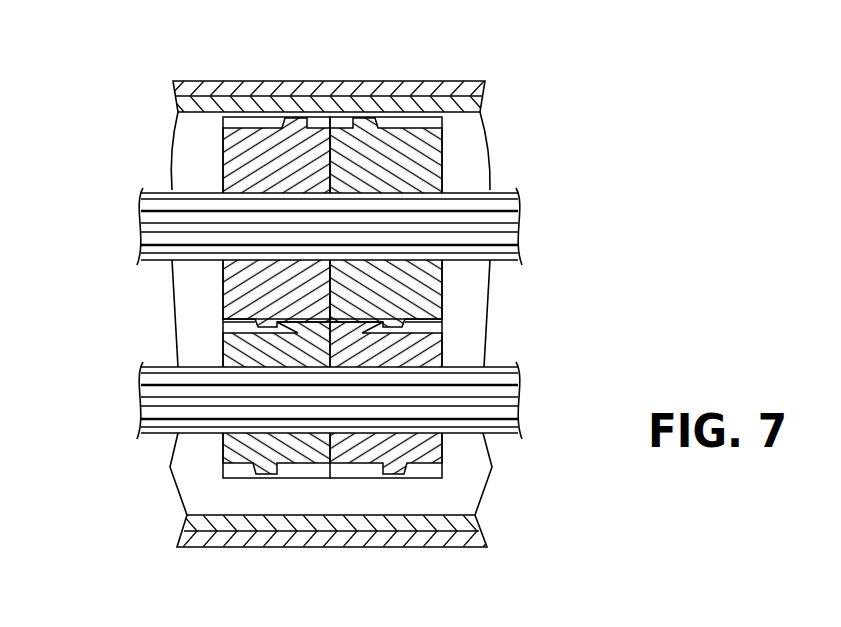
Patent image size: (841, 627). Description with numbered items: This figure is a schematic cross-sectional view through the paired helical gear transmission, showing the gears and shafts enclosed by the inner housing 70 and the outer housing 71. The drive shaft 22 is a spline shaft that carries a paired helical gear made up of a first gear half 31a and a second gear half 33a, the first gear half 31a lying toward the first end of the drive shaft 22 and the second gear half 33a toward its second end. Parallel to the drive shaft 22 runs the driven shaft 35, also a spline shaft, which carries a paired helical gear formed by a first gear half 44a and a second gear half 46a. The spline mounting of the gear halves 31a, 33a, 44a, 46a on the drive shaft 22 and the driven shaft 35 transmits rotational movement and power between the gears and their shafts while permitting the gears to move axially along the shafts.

The inner housing 70 is at (338, 98).
The outer housing 71 is at (437, 88).
The first gear half 31a is at (229, 160).
The second gear half 33a is at (435, 138).
The drive shaft 22 is at (503, 190).
The driven shaft 35 is at (165, 367).
The first gear half 44a is at (222, 452).
The second gear half 46a is at (427, 447).